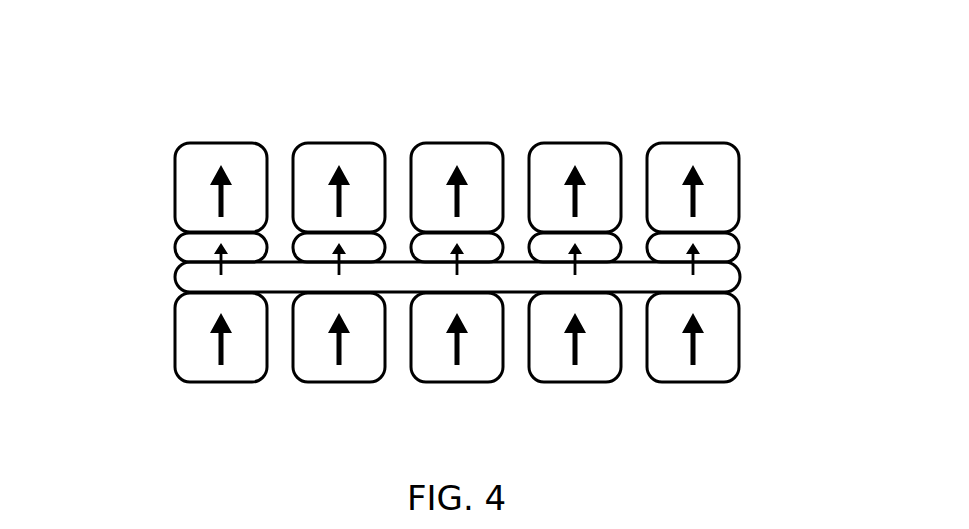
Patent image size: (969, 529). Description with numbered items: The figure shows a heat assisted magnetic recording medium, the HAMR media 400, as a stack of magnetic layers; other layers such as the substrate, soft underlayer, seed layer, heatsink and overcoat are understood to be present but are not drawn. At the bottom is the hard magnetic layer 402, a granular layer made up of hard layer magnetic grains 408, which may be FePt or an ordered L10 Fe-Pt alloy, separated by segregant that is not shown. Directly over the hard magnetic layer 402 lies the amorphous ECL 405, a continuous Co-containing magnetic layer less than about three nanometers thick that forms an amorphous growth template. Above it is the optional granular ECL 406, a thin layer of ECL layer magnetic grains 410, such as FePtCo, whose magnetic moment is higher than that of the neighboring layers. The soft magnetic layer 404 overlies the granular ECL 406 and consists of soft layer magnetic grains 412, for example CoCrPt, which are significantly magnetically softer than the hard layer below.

The HAMR media 400 is at (100, 83).
The hard magnetic layer 402 is at (153, 334).
The soft magnetic layer 404 is at (125, 186).
The amorphous ECL 405 is at (772, 278).
The granular ECL 406 is at (138, 246).
The hard layer magnetic grains 408 is at (252, 337).
The ECL layer magnetic grains 410 is at (308, 246).
The soft layer magnetic grains 412 is at (252, 160).